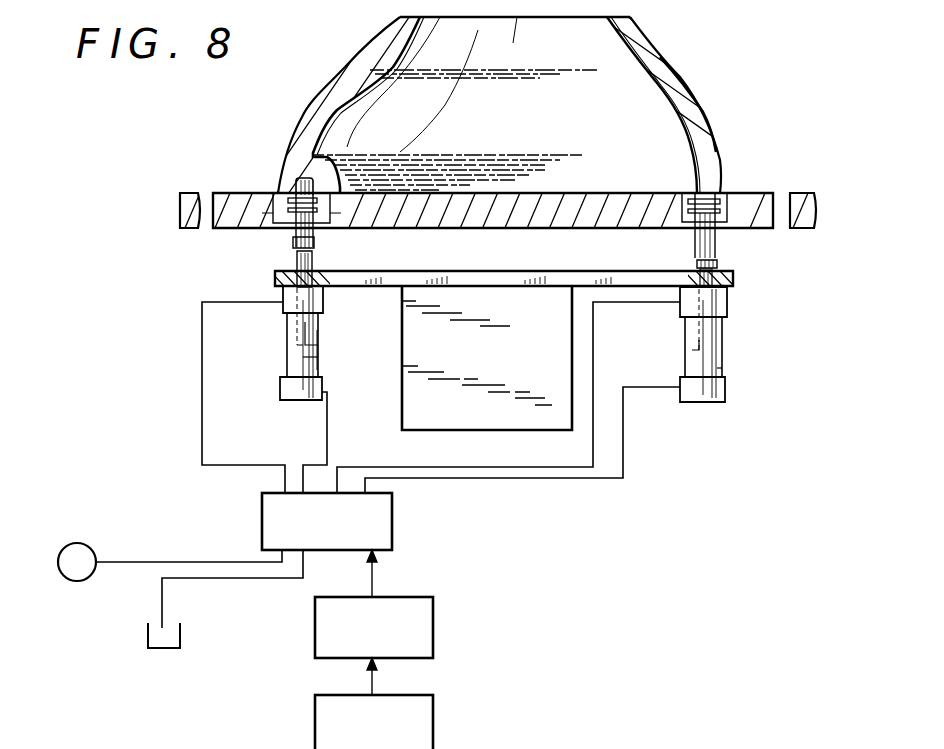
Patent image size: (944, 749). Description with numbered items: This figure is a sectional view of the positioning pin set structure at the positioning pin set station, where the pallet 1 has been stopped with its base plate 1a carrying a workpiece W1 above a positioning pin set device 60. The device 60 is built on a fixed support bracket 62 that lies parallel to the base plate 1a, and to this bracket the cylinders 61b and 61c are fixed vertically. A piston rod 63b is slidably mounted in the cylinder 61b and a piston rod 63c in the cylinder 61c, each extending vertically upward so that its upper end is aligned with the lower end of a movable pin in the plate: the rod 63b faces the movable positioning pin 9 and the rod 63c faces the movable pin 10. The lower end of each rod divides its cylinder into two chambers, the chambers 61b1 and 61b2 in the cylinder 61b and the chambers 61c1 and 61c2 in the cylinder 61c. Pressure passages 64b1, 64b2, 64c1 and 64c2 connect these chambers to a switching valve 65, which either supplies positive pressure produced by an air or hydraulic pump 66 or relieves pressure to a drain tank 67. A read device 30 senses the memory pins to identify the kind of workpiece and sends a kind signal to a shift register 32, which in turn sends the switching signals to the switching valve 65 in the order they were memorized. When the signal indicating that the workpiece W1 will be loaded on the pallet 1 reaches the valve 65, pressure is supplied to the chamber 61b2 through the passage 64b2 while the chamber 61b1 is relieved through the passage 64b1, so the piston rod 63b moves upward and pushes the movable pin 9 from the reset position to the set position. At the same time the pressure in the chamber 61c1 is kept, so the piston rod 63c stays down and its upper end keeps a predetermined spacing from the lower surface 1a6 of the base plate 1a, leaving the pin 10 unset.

The pallet 1 is at (215, 188).
The base plate 1a is at (586, 188).
The lower surface of the base plate 1a6 is at (572, 230).
The movable positioning pin 9 is at (300, 178).
The movable pin 10 is at (716, 195).
The workpiece W1 is at (705, 100).
The fixed support bracket 62 is at (432, 278).
The piston rod 63b is at (293, 244).
The piston rod 63c is at (714, 264).
The cylinder 61b is at (288, 340).
The chamber 61b1 is at (318, 330).
The chamber 61b2 is at (310, 358).
The cylinder 61c is at (728, 360).
The chamber 61c1 is at (698, 330).
The chamber 61c2 is at (725, 372).
The pressure passage 64b1 is at (203, 428).
The pressure passage 64b2 is at (328, 440).
The pressure passage 64c1 is at (453, 468).
The pressure passage 64c2 is at (624, 472).
The switching valve 65 is at (393, 532).
The positioning pin set device 60 is at (477, 500).
The air or hydraulic pump 66 is at (61, 578).
The drain tank 67 is at (147, 628).
The shift register 32 is at (434, 632).
The read device 30 is at (434, 727).